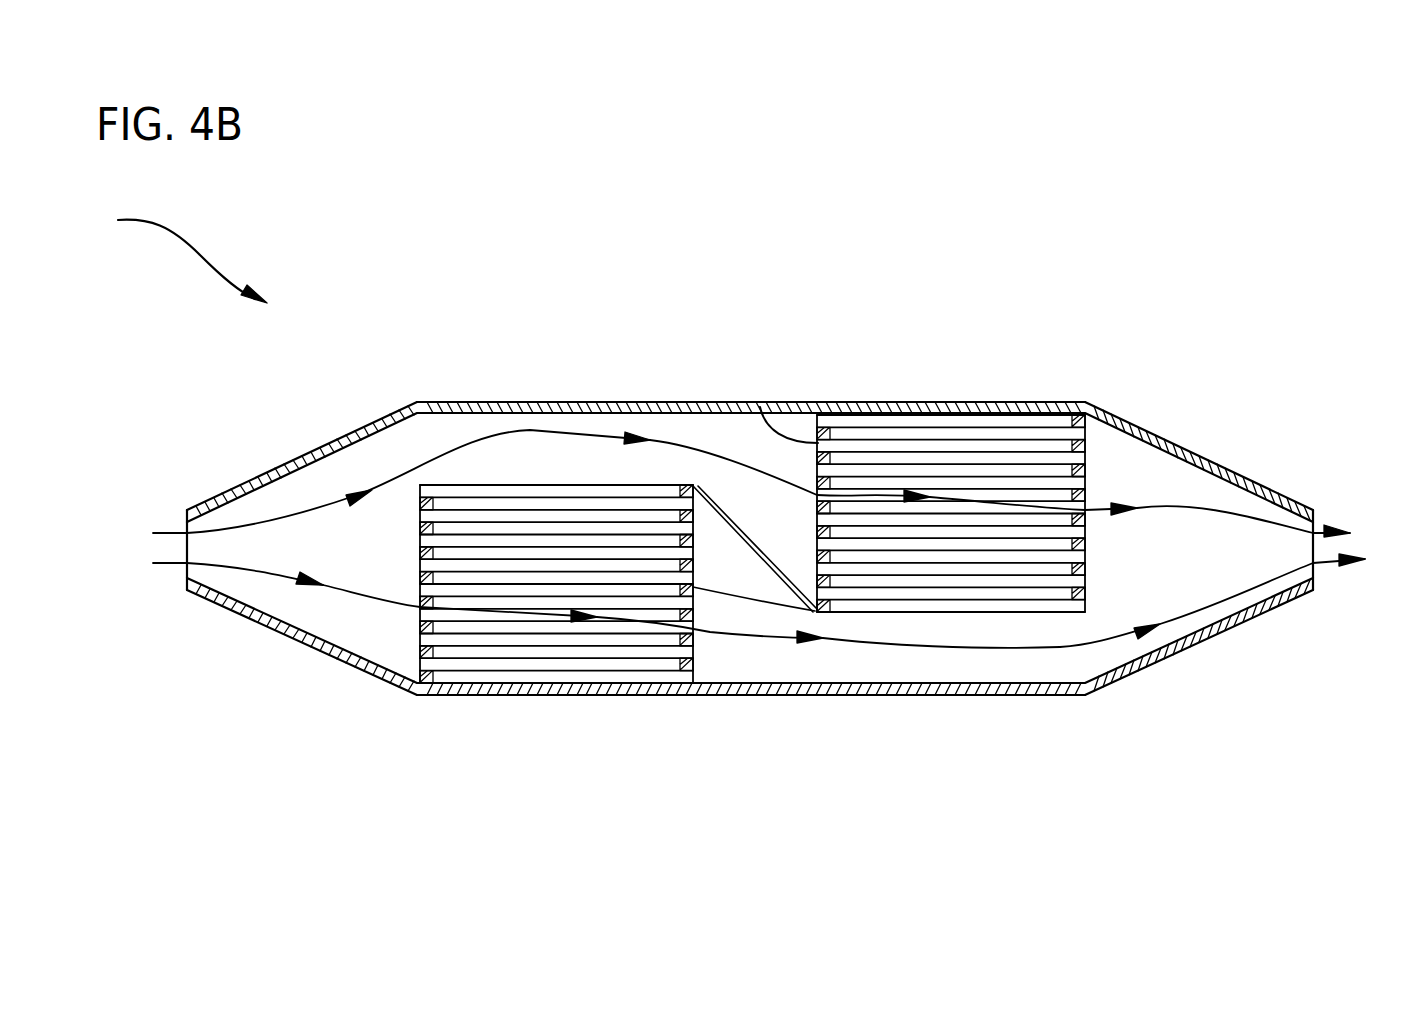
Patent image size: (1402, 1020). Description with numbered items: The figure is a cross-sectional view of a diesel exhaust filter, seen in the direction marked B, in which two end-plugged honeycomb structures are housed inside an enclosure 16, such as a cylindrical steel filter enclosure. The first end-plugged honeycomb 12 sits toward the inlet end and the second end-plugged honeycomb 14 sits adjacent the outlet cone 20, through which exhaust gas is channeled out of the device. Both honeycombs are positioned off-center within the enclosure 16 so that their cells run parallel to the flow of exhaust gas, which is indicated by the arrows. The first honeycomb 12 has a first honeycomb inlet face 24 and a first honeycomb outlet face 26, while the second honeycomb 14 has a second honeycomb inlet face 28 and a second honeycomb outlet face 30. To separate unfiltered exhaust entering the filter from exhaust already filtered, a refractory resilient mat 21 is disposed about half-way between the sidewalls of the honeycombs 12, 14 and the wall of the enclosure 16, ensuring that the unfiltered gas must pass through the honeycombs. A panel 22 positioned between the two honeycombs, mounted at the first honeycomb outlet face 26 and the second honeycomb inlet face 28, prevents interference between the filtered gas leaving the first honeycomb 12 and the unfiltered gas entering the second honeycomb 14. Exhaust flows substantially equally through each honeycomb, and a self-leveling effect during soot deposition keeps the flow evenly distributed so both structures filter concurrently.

The first end-plugged honeycomb 12 is at (533, 658).
The second end-plugged honeycomb 14 is at (938, 418).
The enclosure 16 is at (908, 697).
The outlet cone 20 is at (1313, 585).
The refractory resilient mat 21 is at (608, 688).
The panel 22 is at (760, 573).
The first honeycomb inlet face 24 is at (418, 623).
The first honeycomb outlet face 26 is at (690, 645).
The second honeycomb inlet face 28 is at (760, 405).
The second honeycomb outlet face 30 is at (1095, 420).
The view direction B is at (185, 578).